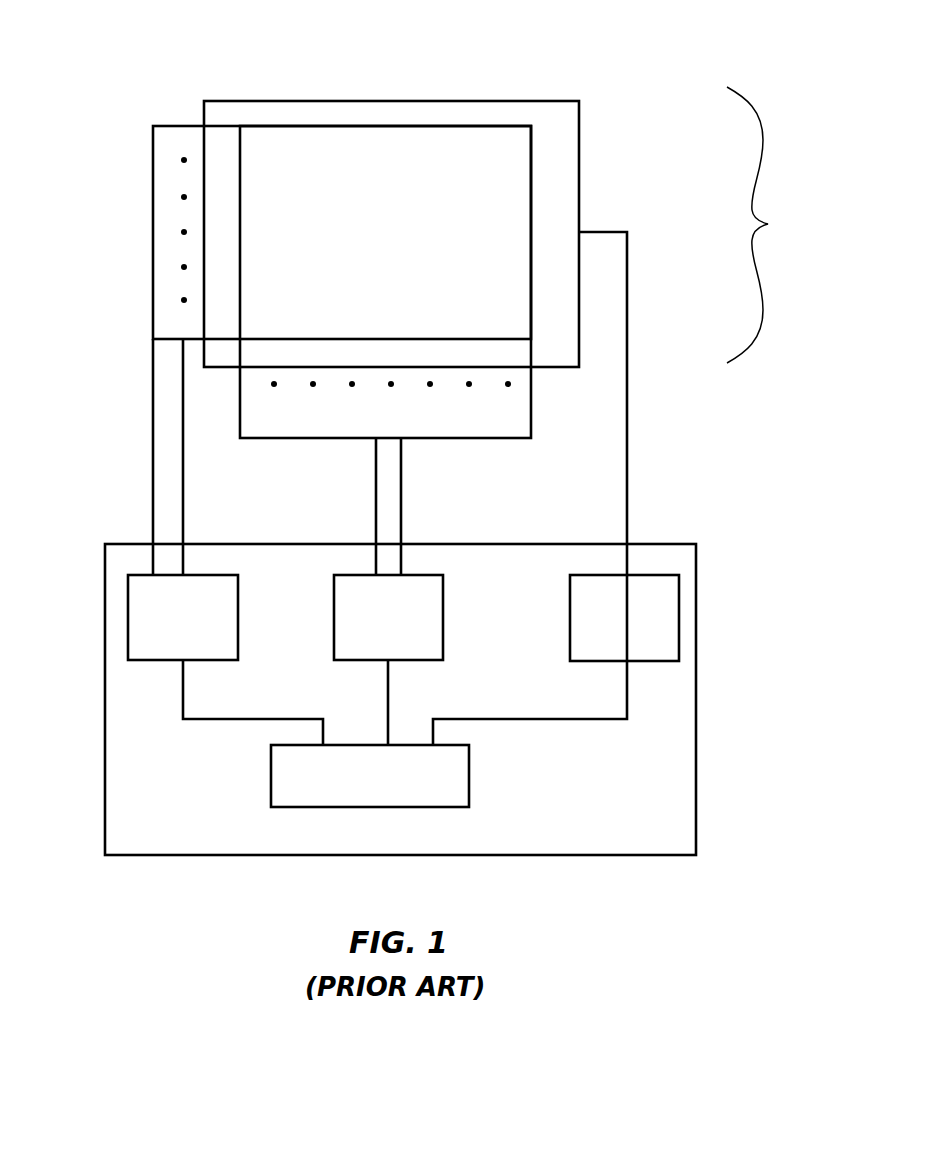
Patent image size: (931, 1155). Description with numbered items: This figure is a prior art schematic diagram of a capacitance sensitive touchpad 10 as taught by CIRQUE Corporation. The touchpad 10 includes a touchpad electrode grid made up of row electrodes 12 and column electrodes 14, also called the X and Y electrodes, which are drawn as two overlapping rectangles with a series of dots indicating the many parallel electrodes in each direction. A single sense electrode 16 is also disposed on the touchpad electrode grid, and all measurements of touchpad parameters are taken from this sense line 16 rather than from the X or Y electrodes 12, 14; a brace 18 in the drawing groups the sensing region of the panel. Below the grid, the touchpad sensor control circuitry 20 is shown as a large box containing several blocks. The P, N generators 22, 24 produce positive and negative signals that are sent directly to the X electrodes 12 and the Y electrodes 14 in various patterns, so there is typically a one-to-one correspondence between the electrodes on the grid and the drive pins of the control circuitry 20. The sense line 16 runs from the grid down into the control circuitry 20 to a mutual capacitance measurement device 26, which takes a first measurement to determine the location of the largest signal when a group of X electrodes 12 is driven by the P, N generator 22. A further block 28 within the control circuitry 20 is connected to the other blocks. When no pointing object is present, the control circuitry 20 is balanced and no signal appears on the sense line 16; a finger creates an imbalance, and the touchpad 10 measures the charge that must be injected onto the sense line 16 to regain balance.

The capacitance sensitive touchpad 10 is at (540, 83).
The row electrodes 12 is at (180, 327).
The column electrodes 14 is at (528, 466).
The sense electrode 16 is at (627, 272).
The touch panel sensor region 18 is at (766, 225).
The touchpad sensor control circuitry 20 is at (696, 724).
The P, N generator 22 is at (128, 609).
The P, N generator 24 is at (443, 605).
The mutual capacitance measurement device 26 is at (570, 642).
The processor 28 is at (469, 775).